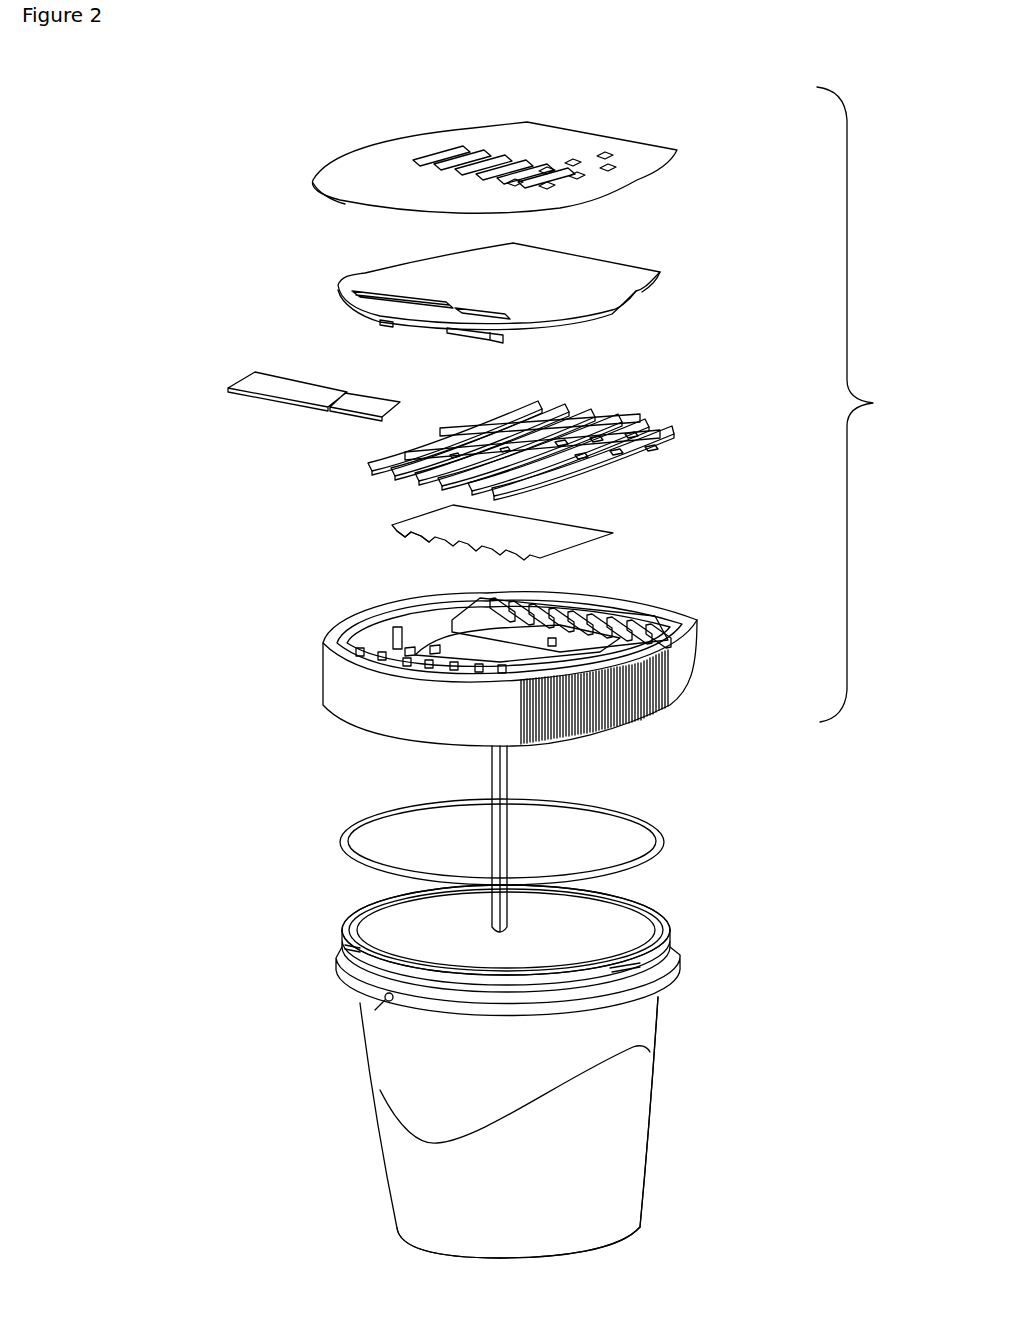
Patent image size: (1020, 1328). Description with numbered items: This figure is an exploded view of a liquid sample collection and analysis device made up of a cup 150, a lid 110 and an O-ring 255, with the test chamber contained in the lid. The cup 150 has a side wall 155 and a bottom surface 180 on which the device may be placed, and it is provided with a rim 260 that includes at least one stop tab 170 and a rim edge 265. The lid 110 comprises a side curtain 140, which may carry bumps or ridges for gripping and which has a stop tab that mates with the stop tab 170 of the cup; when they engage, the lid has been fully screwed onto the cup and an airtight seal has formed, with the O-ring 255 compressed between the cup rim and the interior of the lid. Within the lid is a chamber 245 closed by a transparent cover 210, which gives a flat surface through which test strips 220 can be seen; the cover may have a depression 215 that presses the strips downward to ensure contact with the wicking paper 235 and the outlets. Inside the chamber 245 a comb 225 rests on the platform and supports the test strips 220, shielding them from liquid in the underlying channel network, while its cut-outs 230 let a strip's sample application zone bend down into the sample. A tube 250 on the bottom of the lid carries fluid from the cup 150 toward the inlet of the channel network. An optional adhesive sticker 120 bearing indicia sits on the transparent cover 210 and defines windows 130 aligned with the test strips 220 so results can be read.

The lid 110 is at (868, 404).
The adhesive sticker 120 is at (383, 157).
The windows 130 is at (462, 140).
The transparent cover 210 is at (432, 270).
The depression 215 is at (350, 293).
The test strips 220 is at (393, 450).
The comb 225 is at (467, 520).
The cut-outs 230 is at (407, 532).
The wicking paper 235 is at (357, 415).
The chamber 245 is at (380, 637).
The side curtain 140 is at (640, 703).
The tube 250 is at (490, 770).
The O-ring 255 is at (340, 847).
The rim 260 is at (690, 900).
The rim edge 265 is at (340, 926).
The cup 150 is at (592, 1120).
The side wall 155 is at (643, 1170).
The stop tab 170 is at (385, 1002).
The bottom surface 180 is at (620, 1236).